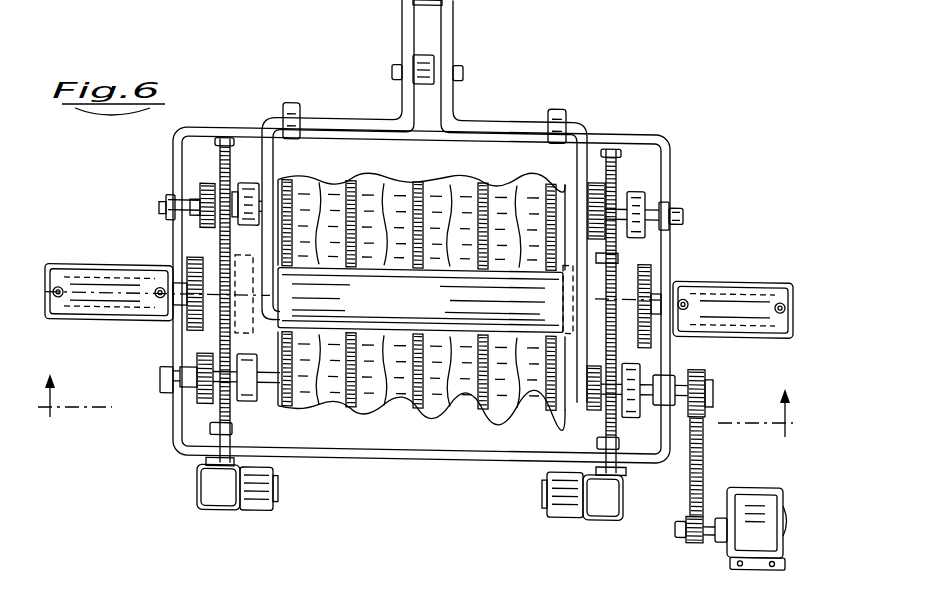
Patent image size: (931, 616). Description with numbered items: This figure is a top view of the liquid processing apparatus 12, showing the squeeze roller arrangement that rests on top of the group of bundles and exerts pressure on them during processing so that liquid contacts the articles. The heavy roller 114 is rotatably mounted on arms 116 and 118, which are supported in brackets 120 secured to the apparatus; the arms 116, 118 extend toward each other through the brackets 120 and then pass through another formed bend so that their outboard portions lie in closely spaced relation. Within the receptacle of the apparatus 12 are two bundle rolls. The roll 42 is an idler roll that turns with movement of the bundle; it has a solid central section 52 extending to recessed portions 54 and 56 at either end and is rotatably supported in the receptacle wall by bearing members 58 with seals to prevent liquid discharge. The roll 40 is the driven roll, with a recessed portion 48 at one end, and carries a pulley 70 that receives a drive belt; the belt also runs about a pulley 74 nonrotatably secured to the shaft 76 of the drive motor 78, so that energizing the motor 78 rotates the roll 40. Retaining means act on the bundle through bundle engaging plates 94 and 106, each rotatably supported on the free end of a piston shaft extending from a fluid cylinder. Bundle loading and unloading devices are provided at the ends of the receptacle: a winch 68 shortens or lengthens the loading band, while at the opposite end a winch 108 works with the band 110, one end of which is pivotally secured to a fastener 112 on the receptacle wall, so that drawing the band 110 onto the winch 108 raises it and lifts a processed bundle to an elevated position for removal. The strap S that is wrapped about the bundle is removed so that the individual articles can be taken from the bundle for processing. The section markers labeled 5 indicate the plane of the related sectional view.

The liquid processing apparatus 12 is at (678, 125).
The brackets 120 is at (291, 105).
The arm 116 is at (278, 161).
The arm 118 is at (583, 158).
The recessed portion 54 is at (218, 187).
The fastener 112 is at (611, 150).
The bundle drive roll 42 is at (232, 232).
The solid central section 52 is at (249, 186).
The bearing members 58 is at (170, 197).
The bundle engaging plate 94 is at (197, 340).
The bundle drive roll 40 is at (217, 403).
The winch 68 is at (258, 500).
The winch 108 is at (602, 512).
The recessed portion 56 is at (618, 202).
The band 110 is at (618, 257).
The bundle engaging plate 106 is at (647, 270).
The recessed portion 48 is at (603, 398).
The pulley 70 is at (700, 378).
The pulley 74 is at (690, 520).
The shaft 76 is at (703, 537).
The drive motor 78 is at (766, 514).
The section line 5- 5 is at (417, 405).
The strap S is at (400, 406).
The heavy roller 114 is at (407, 314).